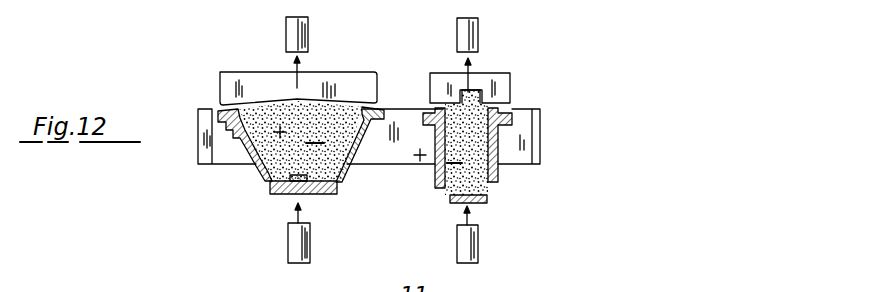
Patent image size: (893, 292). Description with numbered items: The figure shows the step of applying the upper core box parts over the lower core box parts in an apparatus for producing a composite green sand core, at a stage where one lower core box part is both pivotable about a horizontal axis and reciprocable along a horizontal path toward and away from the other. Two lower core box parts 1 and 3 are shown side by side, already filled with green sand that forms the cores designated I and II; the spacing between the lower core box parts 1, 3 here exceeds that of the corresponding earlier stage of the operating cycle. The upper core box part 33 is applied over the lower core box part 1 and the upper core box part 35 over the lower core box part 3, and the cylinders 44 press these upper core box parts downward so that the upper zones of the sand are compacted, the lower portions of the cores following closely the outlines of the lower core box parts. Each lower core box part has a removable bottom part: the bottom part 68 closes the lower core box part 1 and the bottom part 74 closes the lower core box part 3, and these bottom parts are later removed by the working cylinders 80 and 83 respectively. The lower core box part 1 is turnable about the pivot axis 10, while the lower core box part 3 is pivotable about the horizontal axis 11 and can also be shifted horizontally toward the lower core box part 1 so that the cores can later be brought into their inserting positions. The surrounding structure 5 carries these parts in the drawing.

The lower core box part 1 is at (274, 167).
The lower core box part 3 is at (472, 168).
The mold housing 5 is at (537, 117).
The pivot axis 10 is at (247, 150).
The pivot axis 11 is at (417, 152).
The upper core box part 33 is at (246, 84).
The upper core box part 35 is at (492, 88).
The cylinder 44 is at (306, 38).
The bottom part 68 is at (332, 197).
The bottom part 74 is at (490, 202).
The working cylinder 80 is at (295, 240).
The working cylinder 83 is at (478, 250).